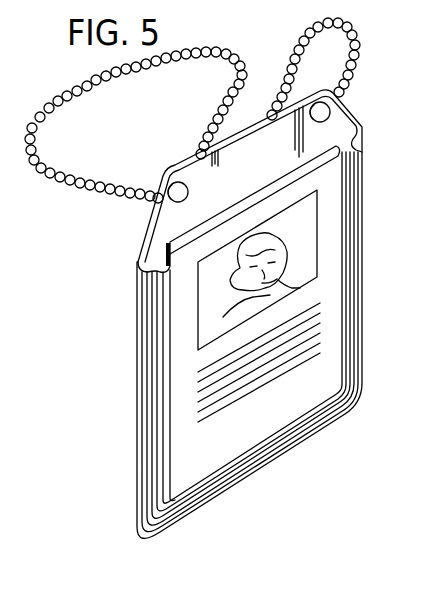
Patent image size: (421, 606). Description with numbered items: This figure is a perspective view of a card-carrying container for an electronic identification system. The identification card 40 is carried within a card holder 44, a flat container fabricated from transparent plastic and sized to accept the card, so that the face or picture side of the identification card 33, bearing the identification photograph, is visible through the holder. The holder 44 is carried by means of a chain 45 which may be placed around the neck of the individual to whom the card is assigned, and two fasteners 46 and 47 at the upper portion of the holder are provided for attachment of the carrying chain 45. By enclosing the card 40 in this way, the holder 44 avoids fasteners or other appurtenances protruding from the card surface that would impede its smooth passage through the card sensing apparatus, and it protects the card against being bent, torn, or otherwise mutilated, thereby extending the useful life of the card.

The face or picture side of the identification card 33 is at (307, 258).
The identification card 40 is at (361, 128).
The card holder 44 is at (142, 233).
The chain 45 is at (143, 73).
The fastener 46 is at (188, 197).
The fastener 47 is at (331, 113).